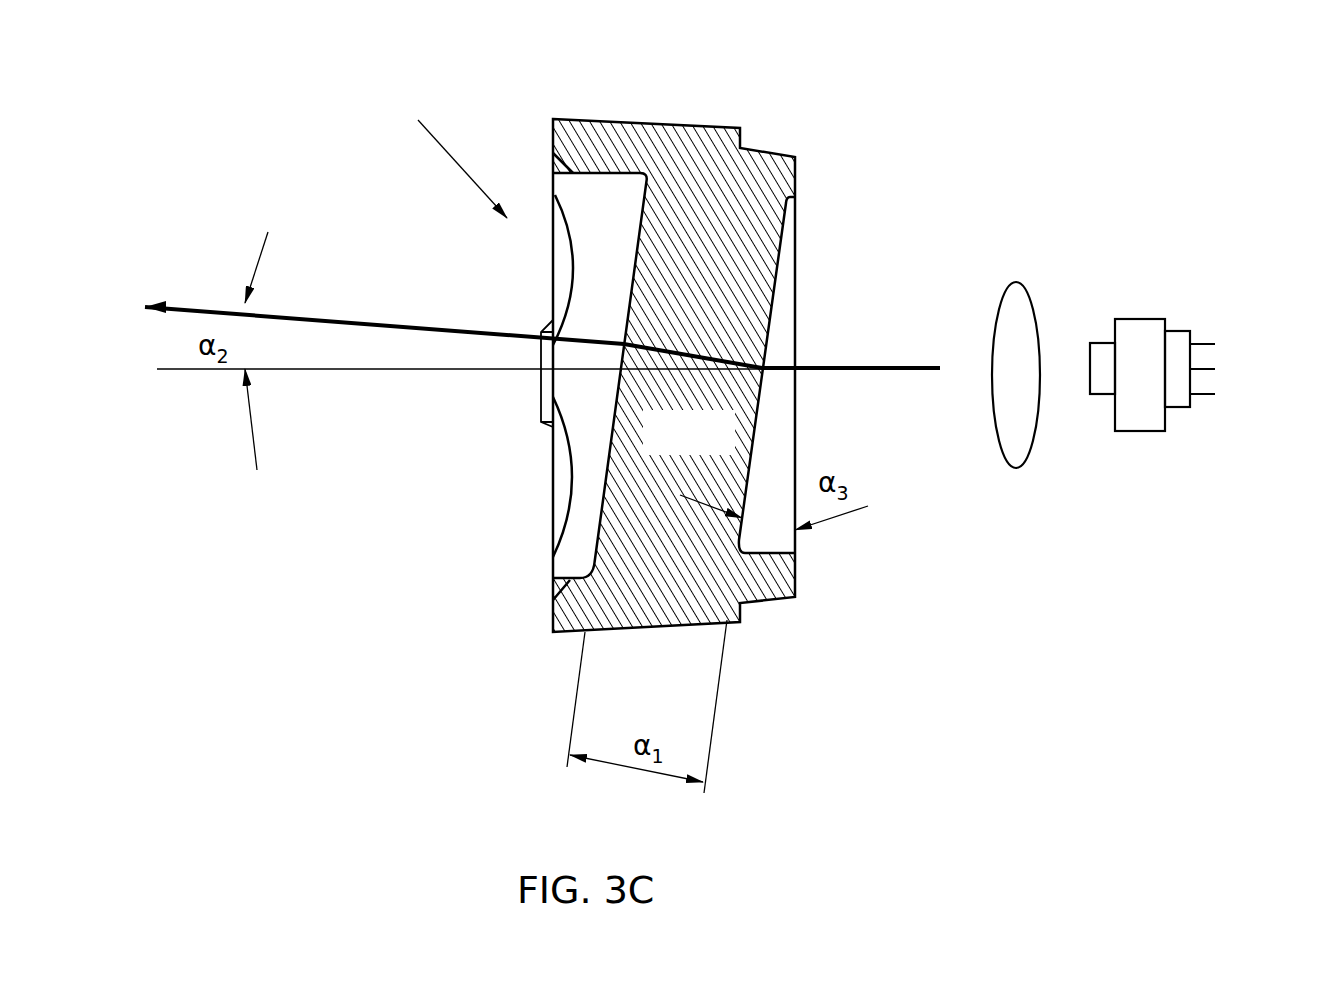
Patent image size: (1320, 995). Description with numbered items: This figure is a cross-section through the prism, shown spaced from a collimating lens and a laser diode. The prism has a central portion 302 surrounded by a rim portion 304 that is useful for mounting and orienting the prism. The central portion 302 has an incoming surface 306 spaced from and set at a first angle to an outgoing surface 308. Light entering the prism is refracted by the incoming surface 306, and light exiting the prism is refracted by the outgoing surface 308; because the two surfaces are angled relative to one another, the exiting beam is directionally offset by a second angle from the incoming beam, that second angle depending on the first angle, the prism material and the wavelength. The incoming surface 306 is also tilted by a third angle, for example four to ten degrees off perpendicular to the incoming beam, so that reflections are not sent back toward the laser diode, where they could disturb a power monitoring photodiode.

The rim portion 304 is at (603, 119).
The incoming surface 306 is at (768, 293).
The outgoing surface 308 is at (605, 468).
The central portion 302 is at (708, 452).